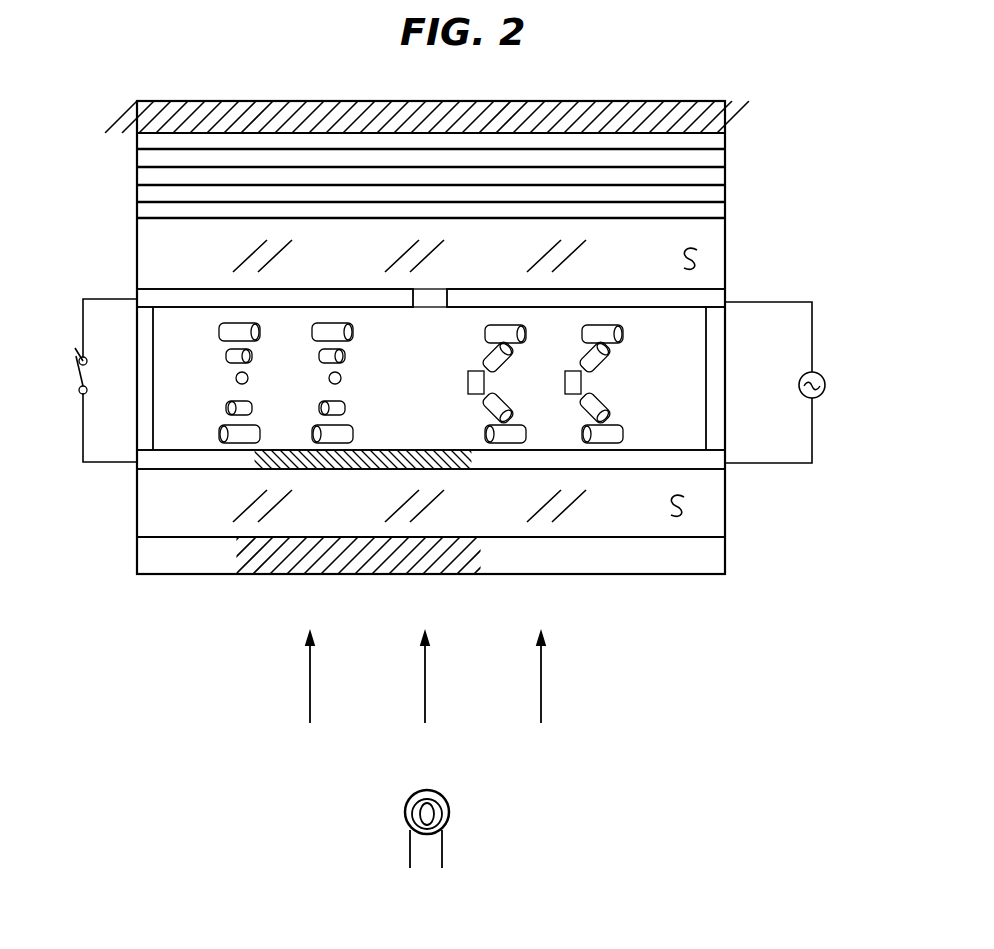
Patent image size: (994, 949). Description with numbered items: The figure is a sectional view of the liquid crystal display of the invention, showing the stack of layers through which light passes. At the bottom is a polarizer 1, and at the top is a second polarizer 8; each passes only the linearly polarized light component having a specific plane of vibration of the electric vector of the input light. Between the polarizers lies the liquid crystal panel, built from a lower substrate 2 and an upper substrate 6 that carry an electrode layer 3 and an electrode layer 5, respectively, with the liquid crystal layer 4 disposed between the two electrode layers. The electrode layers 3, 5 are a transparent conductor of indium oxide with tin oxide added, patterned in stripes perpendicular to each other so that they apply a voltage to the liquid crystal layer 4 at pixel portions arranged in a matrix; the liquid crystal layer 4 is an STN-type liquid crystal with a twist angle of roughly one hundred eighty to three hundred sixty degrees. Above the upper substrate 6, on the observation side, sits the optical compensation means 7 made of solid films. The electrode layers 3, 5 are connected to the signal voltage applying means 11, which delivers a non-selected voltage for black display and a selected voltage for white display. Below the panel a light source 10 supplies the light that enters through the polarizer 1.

The polarizer 1 is at (153, 572).
The substrate 2 is at (165, 500).
The electrode layer 3 is at (693, 468).
The liquid crystal layer 4 is at (687, 383).
The electrode layer 5 is at (715, 288).
The substrate 6 is at (155, 260).
The optical compensation means 7 is at (735, 137).
The polarizer 8 is at (147, 110).
The light source 10 is at (450, 810).
The signal voltage applying means 11 is at (826, 387).